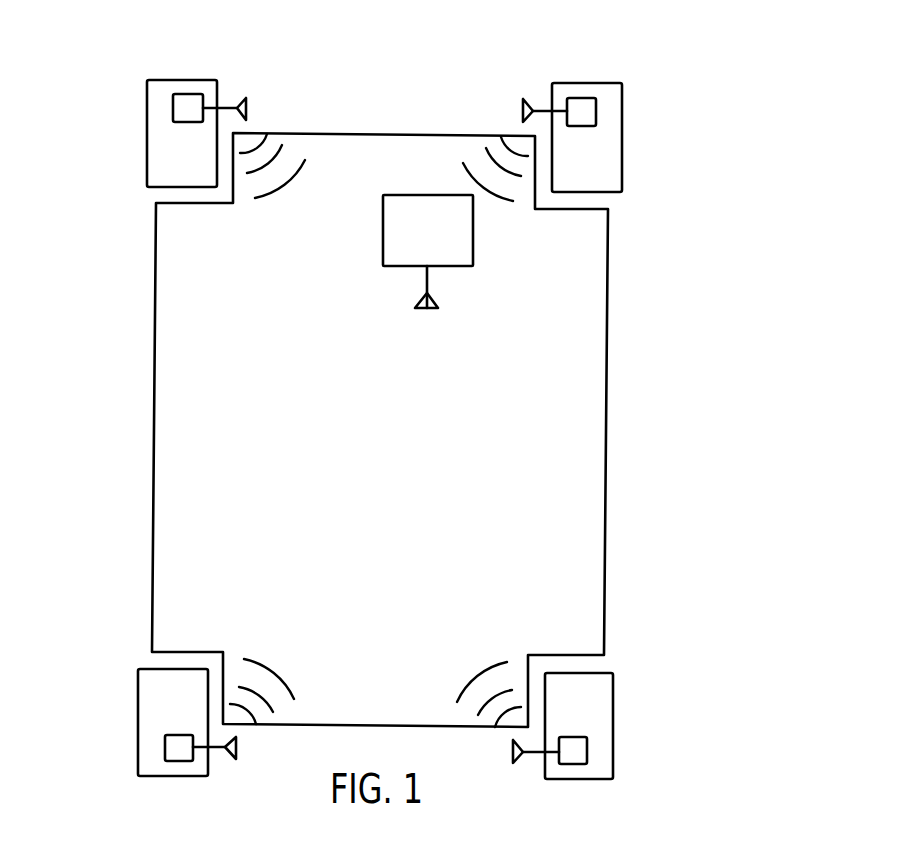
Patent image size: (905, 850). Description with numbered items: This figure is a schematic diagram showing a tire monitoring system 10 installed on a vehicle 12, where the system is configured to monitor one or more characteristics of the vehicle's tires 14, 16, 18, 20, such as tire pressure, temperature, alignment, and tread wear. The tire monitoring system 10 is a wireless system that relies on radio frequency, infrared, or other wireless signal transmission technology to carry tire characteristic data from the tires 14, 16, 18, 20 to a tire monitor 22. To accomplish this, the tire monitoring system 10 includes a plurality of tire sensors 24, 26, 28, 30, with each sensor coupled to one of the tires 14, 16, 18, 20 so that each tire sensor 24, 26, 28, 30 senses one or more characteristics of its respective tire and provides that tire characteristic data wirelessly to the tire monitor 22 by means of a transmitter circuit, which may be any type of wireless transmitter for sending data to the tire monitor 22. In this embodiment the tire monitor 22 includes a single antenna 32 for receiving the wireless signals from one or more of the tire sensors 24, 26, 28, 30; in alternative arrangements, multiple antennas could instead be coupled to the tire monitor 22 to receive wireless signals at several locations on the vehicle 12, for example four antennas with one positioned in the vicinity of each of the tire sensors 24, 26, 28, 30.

The tire monitoring system 10 is at (718, 93).
The vehicle 12 is at (605, 430).
The tire 14 is at (164, 105).
The tire 16 is at (599, 108).
The tire 18 is at (152, 694).
The tire 20 is at (594, 698).
The tire monitor 22 is at (439, 238).
The tire sensor 24 is at (173, 108).
The tire sensor 26 is at (596, 111).
The tire sensor 28 is at (175, 735).
The tire sensor 30 is at (575, 737).
The antenna 32 is at (427, 285).